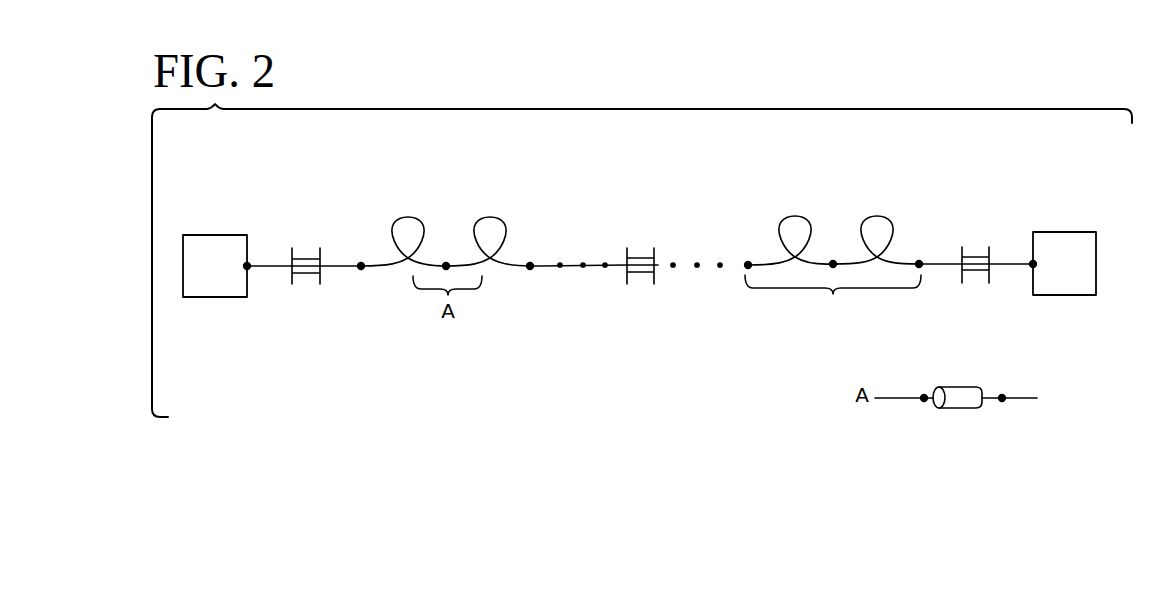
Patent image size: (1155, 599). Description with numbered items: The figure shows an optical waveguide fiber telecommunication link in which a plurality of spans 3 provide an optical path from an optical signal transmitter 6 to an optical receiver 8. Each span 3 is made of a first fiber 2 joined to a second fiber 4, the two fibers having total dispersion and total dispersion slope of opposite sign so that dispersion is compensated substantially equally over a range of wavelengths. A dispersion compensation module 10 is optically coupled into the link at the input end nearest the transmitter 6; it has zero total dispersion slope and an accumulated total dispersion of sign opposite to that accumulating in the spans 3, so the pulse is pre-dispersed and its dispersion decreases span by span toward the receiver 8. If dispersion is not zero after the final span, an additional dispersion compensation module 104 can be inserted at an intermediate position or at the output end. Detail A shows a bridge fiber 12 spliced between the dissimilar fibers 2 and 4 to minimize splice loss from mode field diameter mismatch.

The first fiber 2 is at (412, 220).
The span 3 is at (833, 297).
The second fiber 4 is at (493, 220).
The optical signal transmitter 6 is at (215, 235).
The optical receiver 8 is at (1065, 232).
The dispersion compensation module 10 is at (305, 259).
The additional dispersion compensation module 104 is at (640, 258).
The bridge fiber 12 is at (962, 387).